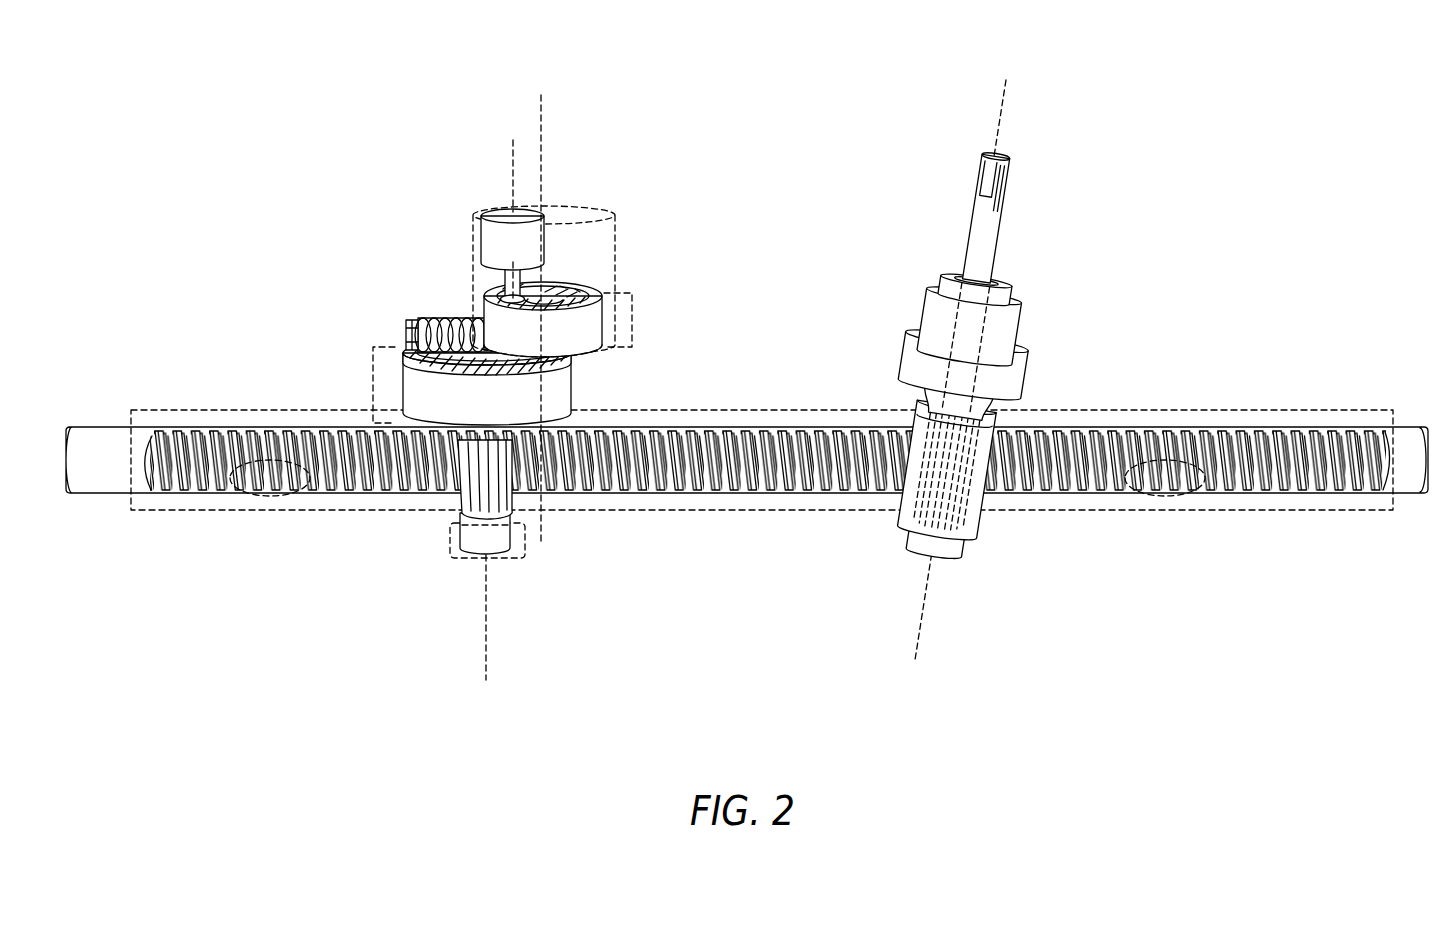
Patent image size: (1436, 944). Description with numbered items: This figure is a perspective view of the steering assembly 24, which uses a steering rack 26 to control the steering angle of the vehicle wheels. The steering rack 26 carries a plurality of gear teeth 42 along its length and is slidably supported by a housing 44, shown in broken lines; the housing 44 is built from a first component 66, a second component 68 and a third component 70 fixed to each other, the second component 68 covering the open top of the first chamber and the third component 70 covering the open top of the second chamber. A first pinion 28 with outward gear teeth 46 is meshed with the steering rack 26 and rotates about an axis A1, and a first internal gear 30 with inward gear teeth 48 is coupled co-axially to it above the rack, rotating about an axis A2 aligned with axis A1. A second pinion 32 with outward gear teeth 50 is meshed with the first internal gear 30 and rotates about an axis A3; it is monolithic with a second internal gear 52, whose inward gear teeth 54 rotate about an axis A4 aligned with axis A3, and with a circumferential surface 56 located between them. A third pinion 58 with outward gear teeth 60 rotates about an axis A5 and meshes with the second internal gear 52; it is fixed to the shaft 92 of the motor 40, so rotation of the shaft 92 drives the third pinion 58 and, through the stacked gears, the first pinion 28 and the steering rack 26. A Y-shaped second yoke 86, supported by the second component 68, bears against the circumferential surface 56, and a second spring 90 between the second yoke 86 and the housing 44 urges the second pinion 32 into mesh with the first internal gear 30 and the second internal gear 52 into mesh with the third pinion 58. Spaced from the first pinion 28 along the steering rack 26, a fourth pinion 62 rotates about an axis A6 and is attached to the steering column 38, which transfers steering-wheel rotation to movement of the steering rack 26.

The steering assembly 24 is at (776, 159).
The steering rack 26 is at (1413, 440).
The first pinion 28 is at (512, 500).
The first internal gear 30 is at (425, 404).
The second pinion 32 is at (515, 375).
The steering column 38 is at (997, 260).
The motor 40 is at (486, 226).
The gear teeth 42 is at (700, 466).
The housing 44 is at (1117, 410).
The gear teeth 46 is at (465, 495).
The gear teeth 48 is at (394, 304).
The gear teeth 50 is at (547, 365).
The second internal gear 52 is at (577, 267).
The gear teeth 54 is at (592, 292).
The circumferential surface 56 is at (562, 354).
The third pinion 58 is at (572, 290).
The gear teeth 60 is at (548, 290).
The fourth pinion 62 is at (970, 499).
The first component 66 is at (392, 400).
The second component 68 is at (610, 318).
The third component 70 is at (577, 195).
The second yoke 86 is at (490, 332).
The second spring 90 is at (437, 328).
The shaft 92 is at (502, 277).
The axis A1 is at (486, 662).
The axis A2 is at (438, 617).
The axis A3 is at (541, 102).
The axis A4 is at (493, 309).
The axis A5 is at (513, 145).
The axis A6 is at (1000, 105).